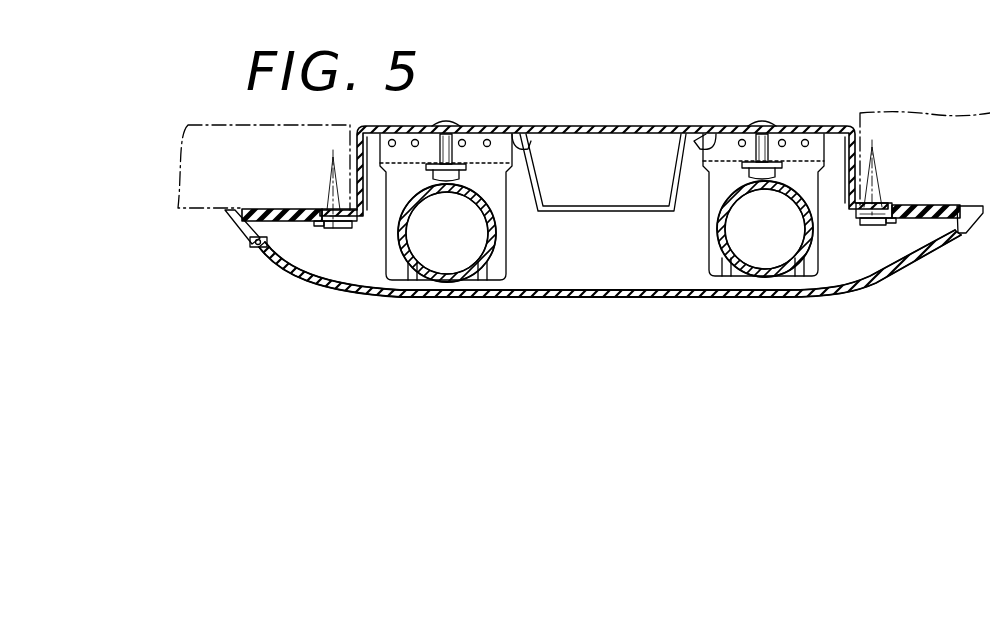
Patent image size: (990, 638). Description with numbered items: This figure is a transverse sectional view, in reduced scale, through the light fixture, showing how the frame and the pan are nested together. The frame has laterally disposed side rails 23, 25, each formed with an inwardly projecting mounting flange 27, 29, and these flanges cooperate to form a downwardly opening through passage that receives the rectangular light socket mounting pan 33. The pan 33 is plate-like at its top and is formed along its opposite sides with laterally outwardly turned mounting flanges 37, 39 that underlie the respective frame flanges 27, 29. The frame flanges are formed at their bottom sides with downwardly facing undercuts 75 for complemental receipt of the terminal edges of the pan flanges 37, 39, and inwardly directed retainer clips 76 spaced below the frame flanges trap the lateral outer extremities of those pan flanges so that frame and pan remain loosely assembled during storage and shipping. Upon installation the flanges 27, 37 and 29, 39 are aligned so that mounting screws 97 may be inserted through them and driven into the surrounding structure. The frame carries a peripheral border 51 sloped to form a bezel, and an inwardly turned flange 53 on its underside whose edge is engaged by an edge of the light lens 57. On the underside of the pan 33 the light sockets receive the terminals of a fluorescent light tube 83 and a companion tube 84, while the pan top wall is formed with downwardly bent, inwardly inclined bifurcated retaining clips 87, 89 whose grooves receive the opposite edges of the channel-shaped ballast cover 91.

The side rail 23 is at (285, 205).
The side rail 25 is at (937, 201).
The mounting flange 27 is at (330, 212).
The mounting flange 29 is at (873, 210).
The light socket mounting pan 33 is at (801, 125).
The mounting flange 37 is at (352, 224).
The mounting flange 39 is at (870, 218).
The peripheral border 51 is at (223, 214).
The inwardly turned flange 53 is at (257, 247).
The light lens 57 is at (626, 298).
The undercut 75 is at (346, 229).
The retainer clip 76 is at (321, 227).
The fluorescent light tube 83 is at (447, 285).
The ring 84 is at (765, 278).
The retaining clip 87 is at (529, 150).
The retaining clip 89 is at (694, 149).
The ballast cover 91 is at (590, 212).
The mounting screw 97 is at (343, 227).